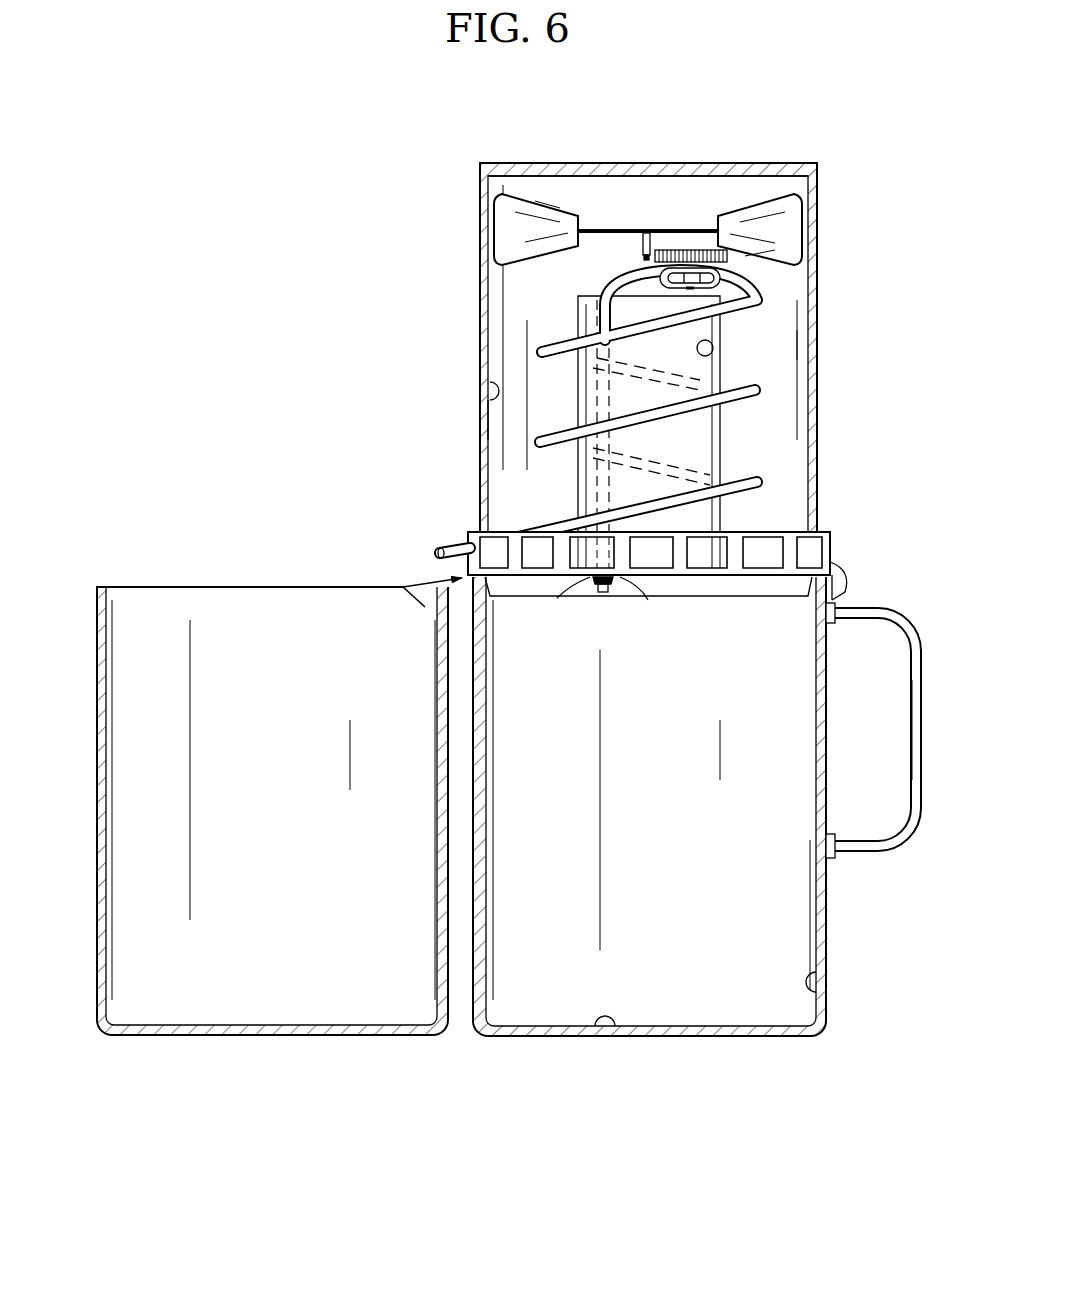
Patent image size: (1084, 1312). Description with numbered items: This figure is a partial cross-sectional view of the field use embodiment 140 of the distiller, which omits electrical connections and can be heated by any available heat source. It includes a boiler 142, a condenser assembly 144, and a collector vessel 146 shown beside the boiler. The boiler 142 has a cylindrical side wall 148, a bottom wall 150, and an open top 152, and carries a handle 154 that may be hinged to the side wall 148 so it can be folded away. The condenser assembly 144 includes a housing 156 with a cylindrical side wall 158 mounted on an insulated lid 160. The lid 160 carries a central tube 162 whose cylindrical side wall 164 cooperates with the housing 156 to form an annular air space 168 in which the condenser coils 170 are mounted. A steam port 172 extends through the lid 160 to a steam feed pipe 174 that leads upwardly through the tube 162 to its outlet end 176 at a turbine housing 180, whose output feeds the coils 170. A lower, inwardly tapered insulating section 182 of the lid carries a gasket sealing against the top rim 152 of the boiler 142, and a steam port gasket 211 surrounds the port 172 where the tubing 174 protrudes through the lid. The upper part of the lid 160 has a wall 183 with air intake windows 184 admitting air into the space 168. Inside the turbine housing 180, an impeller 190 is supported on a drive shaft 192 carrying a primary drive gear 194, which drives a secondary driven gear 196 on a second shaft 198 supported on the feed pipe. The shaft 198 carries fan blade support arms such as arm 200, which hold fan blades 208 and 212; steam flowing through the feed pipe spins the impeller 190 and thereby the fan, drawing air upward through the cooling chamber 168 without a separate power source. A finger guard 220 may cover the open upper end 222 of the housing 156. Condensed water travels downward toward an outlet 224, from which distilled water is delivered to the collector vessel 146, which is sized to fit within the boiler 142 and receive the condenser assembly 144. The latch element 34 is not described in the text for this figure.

The latch member 34 is at (847, 573).
The field use embodiment 140 is at (876, 138).
The boiler 142 is at (826, 922).
The condenser assembly 144 is at (820, 250).
The collector vessel 146 is at (300, 1045).
The cylindrical side wall 148 is at (818, 976).
The bottom wall 150 is at (600, 1034).
The open top 152 is at (425, 607).
The handle 154 is at (920, 720).
The housing 156 is at (486, 420).
The cylindrical side wall 158 is at (492, 392).
The insulated lid 160 is at (753, 548).
The central tube 162 is at (760, 390).
The cylindrical side wall 164 is at (717, 352).
The annular air space 168 is at (793, 352).
The condenser coils 170 is at (770, 472).
The steam port 172 is at (603, 594).
The steam feed pipe 174 is at (578, 378).
The outlet end 176 is at (605, 285).
The turbine housing 180 is at (723, 283).
The inwardly tapered insulating section 182 is at (525, 594).
The wall 183 is at (830, 548).
The air intake windows 184 is at (807, 546).
The impeller 190 is at (735, 280).
The drive shaft 192 is at (660, 267).
The primary drive gear 194 is at (702, 252).
The driven gear 196 is at (647, 250).
The second shaft 198 is at (664, 252).
The fan blade support arm 200 is at (607, 228).
The fan blade 208 is at (532, 208).
The steam port gasket 211 is at (622, 592).
The fan blade 212 is at (787, 222).
The finger guard 220 is at (793, 176).
The open upper end 222 is at (480, 178).
The outlet 224 is at (436, 556).